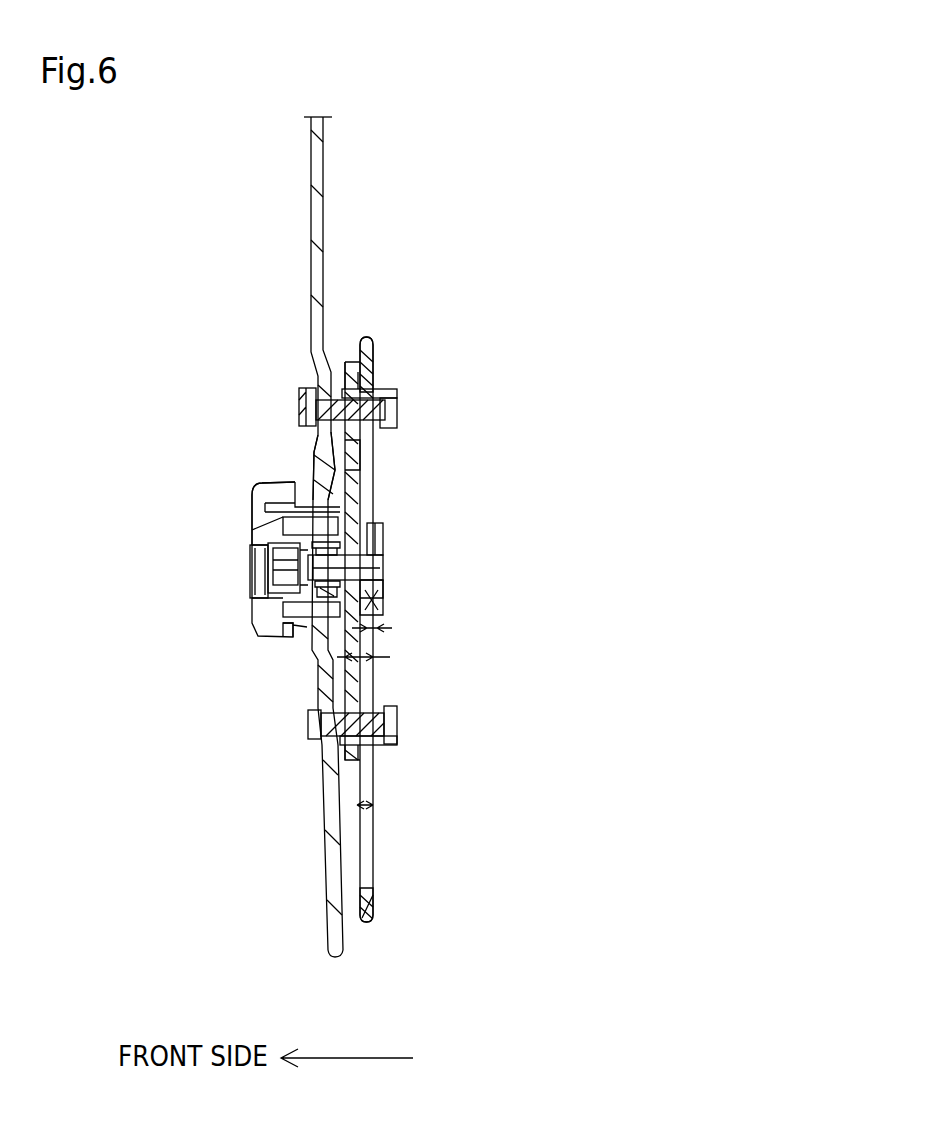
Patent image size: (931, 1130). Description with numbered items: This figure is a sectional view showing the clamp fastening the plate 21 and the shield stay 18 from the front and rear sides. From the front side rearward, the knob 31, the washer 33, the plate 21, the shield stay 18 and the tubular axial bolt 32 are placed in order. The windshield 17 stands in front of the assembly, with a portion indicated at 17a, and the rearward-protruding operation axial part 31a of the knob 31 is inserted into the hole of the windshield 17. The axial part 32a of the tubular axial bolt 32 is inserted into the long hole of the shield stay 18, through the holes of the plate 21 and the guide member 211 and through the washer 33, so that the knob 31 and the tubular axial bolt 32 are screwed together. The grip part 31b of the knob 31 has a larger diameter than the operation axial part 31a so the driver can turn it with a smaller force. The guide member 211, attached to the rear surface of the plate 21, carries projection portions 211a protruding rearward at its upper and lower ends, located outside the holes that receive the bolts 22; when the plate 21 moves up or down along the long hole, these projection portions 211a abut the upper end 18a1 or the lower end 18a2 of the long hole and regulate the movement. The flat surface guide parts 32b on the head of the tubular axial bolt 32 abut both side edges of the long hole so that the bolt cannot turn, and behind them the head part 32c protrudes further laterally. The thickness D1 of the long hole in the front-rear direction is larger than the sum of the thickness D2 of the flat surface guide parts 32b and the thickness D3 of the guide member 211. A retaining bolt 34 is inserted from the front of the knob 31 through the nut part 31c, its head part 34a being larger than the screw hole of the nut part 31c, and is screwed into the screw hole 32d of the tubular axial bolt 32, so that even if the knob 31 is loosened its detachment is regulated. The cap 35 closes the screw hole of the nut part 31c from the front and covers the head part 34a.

The windshield 17 is at (318, 150).
The bent portion of plate 17a is at (312, 470).
The shield stay 18 is at (372, 905).
The upper end of long hole 18a1 is at (372, 338).
The lower end of long hole 18a2 is at (372, 888).
The plate 21 is at (342, 385).
The guide member 211 is at (372, 447).
The projection portions 211a is at (366, 386).
The bolts 22 is at (303, 400).
The knob 31 is at (265, 637).
The operation axial part 31a is at (320, 630).
The grip part 31b is at (256, 488).
The nut part 31c is at (293, 630).
The tubular axial bolt 32 is at (380, 597).
The axial part 32a is at (380, 597).
The flat surface guide parts 32b is at (380, 596).
The head part 32c is at (380, 537).
The screw hole 32d is at (382, 538).
The washer 33 is at (366, 536).
The retaining bolt 34 is at (306, 572).
The head part 34a is at (282, 555).
The cap 35 is at (262, 585).
The thickness of long hole D1 is at (368, 812).
The thickness of flat surface guide parts D2 is at (372, 632).
The thickness of guide member D3 is at (369, 658).